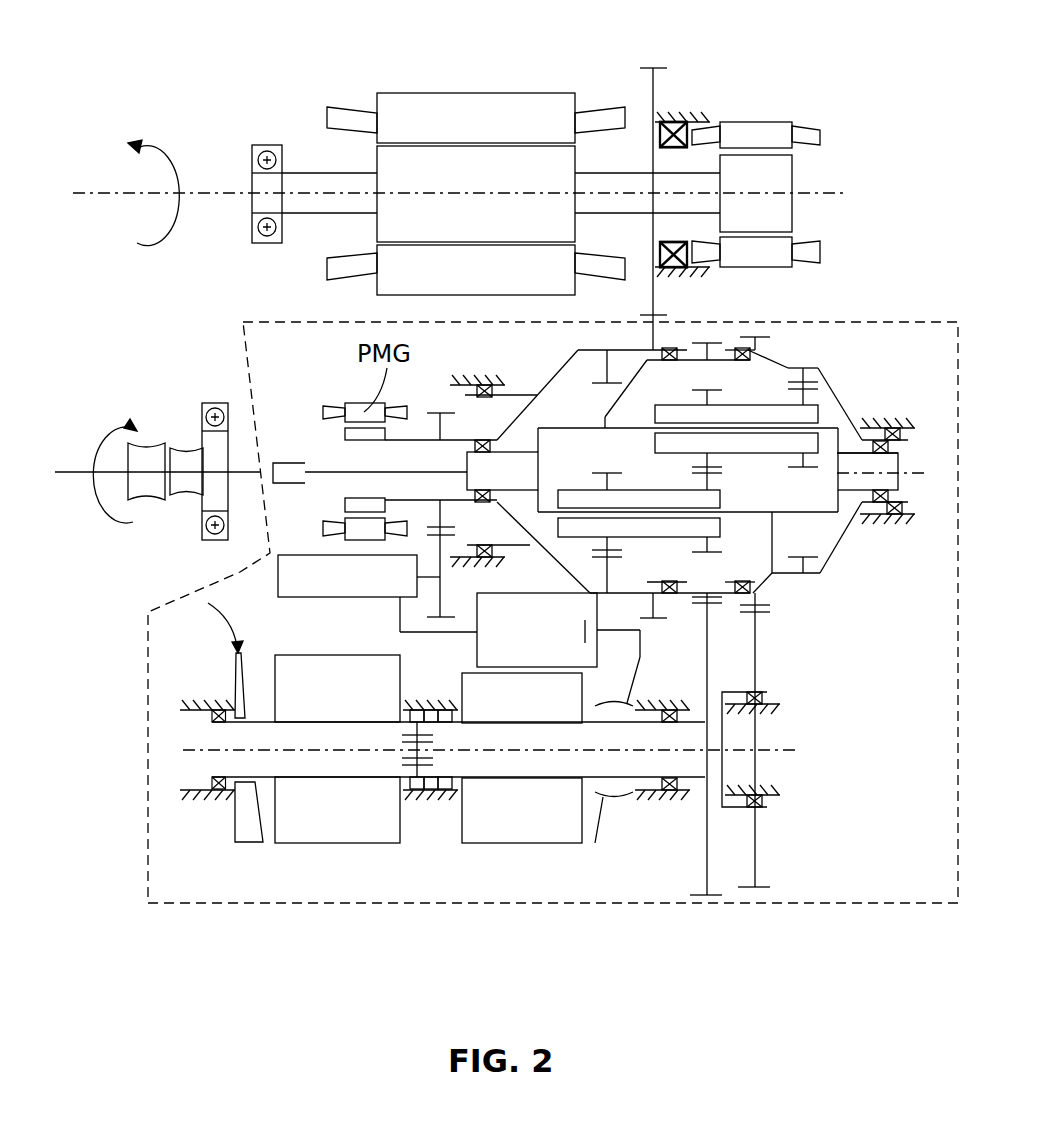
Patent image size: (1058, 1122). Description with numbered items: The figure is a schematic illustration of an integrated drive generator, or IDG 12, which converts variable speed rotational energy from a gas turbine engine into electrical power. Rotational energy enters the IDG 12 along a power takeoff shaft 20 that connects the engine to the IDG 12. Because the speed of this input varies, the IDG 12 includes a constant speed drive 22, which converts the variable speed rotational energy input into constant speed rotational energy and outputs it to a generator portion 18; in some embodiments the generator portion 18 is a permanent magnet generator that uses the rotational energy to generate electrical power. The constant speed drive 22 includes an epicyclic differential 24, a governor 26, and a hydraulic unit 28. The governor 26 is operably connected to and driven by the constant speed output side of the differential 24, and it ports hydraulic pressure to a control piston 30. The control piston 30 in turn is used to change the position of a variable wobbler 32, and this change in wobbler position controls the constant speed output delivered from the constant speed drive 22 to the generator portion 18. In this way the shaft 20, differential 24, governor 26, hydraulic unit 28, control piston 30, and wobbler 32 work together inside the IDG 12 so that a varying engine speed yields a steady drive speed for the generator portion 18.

The integrated drive generator 12 is at (228, 33).
The generator portion 18 is at (584, 68).
The power takeoff shaft 20 is at (94, 474).
The constant speed drive 22 is at (268, 905).
The epicyclic differential 24 is at (828, 352).
The governor 26 is at (312, 554).
The hydraulic unit 28 is at (423, 872).
The control piston 30 is at (472, 640).
The variable wobbler 32 is at (590, 858).